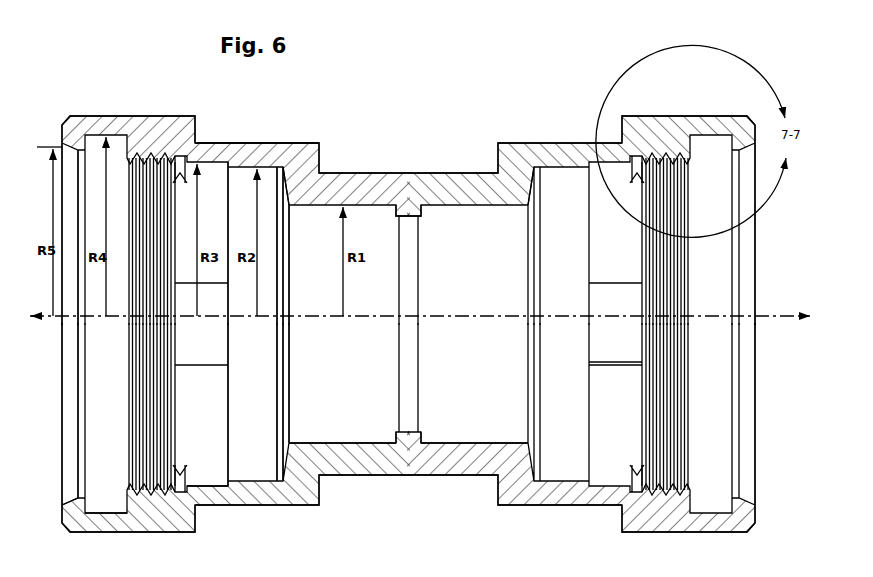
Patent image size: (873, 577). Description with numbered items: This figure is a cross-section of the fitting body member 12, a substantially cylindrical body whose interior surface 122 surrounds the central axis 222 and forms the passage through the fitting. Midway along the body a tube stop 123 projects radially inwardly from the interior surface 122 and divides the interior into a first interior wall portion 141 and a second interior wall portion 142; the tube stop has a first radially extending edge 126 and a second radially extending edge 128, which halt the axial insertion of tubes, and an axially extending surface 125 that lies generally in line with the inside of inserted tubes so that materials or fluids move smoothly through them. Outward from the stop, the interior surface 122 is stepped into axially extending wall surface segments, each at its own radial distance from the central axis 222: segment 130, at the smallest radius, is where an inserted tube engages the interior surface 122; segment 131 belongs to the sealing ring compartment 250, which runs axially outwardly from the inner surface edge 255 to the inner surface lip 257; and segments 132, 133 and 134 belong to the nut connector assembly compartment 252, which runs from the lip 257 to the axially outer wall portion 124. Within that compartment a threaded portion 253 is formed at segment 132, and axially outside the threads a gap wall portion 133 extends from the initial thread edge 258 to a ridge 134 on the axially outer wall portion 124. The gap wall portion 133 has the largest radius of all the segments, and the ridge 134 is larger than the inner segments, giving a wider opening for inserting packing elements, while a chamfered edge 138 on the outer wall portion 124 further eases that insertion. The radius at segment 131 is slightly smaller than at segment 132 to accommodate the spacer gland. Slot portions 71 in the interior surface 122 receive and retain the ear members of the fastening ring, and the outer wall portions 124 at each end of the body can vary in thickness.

The fitting body member 12 is at (420, 62).
The slot portions 71 is at (656, 337).
The interior surface 122 is at (485, 208).
The tube stop 123 is at (421, 210).
The axially outer wall portions 124 is at (55, 115).
The axially extending surface 125 is at (411, 412).
The first radially extending edge 126 is at (394, 436).
The second radially extending edge 128 is at (428, 441).
The wall surface segment 130 is at (331, 441).
The wall surface segment 131 is at (263, 477).
The wall surface segment 132 is at (202, 482).
The gap wall portion 133 is at (108, 509).
The ridge 134 is at (73, 487).
The chamfered edge 138 is at (70, 498).
The first interior wall portion 141 is at (306, 203).
The second interior wall portion 142 is at (466, 210).
The central axis 222 is at (31, 317).
The sealing ring compartment 250 is at (274, 460).
The nut connector assembly compartment 252 is at (224, 459).
The threaded portion 253 is at (152, 172).
The inner surface edge 255 is at (291, 441).
The inner surface lip 257 is at (232, 155).
The initial thread edge 258 is at (129, 494).